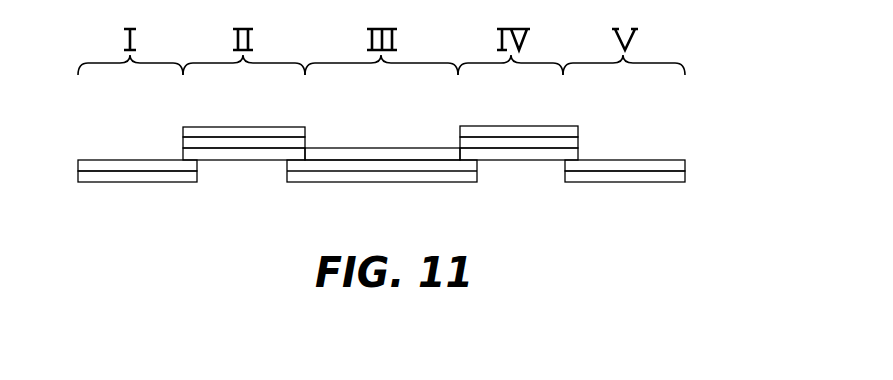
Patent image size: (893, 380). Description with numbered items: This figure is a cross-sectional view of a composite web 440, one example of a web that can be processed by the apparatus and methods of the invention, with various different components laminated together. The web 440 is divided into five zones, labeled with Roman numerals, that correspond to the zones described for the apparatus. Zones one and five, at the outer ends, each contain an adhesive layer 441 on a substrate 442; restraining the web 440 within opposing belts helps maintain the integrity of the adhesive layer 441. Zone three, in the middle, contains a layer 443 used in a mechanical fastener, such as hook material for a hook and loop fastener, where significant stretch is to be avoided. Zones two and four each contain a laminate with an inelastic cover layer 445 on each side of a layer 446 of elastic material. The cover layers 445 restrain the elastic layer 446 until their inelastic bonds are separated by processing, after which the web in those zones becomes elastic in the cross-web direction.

The web 440 is at (70, 201).
The adhesive layer 441 is at (133, 162).
The substrate 442 is at (132, 183).
The layer used in a mechanical fastener 443 is at (382, 153).
The inelastic cover layer 445 is at (280, 132).
The layer of elastic material 446 is at (222, 142).